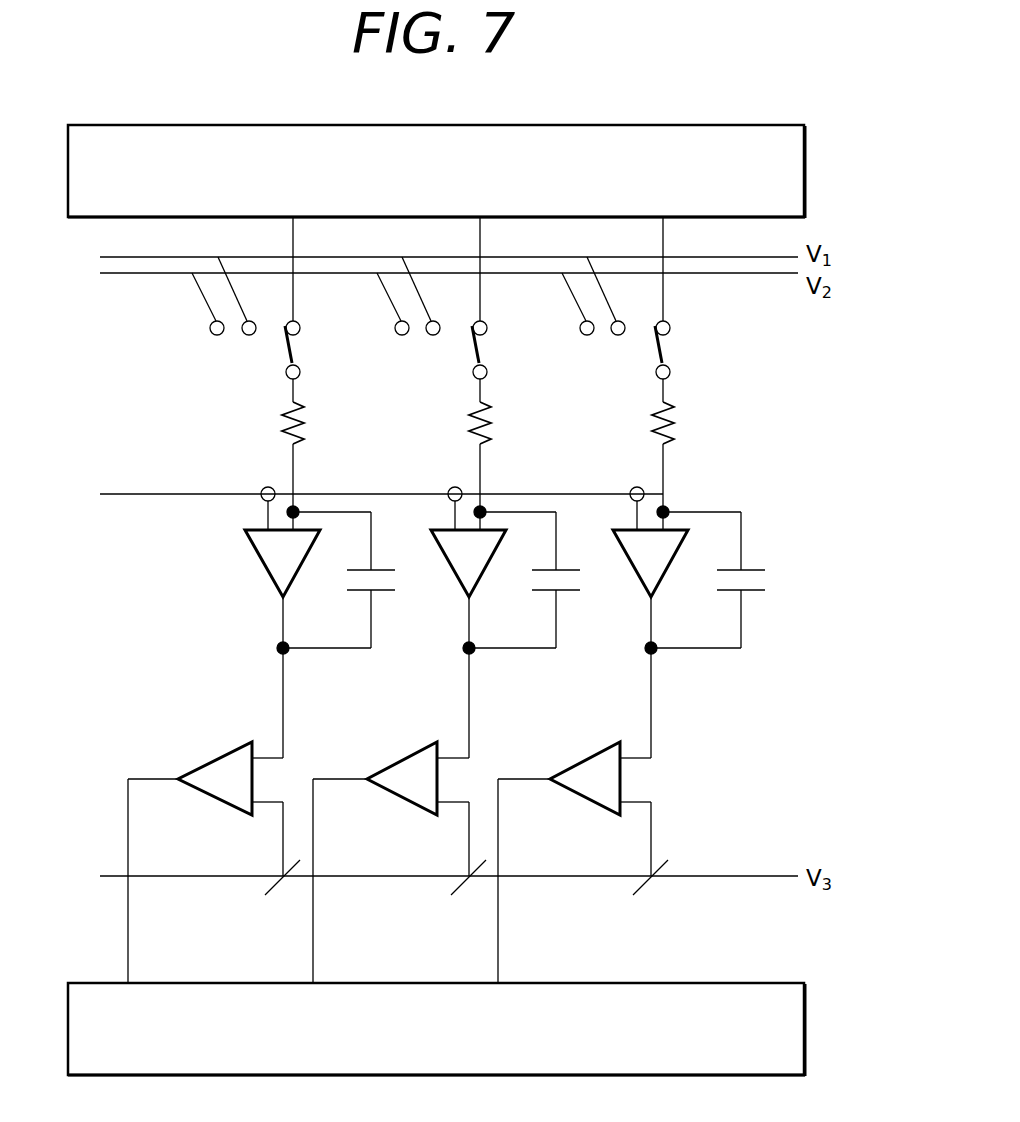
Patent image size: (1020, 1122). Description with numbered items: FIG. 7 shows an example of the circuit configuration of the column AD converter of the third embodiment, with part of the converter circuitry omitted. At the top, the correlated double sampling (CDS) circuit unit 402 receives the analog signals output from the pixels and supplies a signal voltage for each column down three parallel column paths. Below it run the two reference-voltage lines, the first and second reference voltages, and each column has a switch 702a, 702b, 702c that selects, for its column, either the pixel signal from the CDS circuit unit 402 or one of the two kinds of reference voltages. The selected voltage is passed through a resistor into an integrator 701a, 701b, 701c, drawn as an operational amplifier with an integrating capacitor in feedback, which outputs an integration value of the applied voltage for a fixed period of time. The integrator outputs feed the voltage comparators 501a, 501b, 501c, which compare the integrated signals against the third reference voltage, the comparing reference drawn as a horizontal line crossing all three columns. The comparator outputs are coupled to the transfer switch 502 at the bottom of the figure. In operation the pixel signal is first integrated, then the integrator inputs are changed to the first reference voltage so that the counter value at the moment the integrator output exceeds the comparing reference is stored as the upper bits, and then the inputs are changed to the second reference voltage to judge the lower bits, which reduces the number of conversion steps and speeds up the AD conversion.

The correlated double sampling (CDS) circuit unit 402 is at (806, 166).
The transfer switch 502 is at (806, 1029).
The switch 702a is at (308, 350).
The switch 702b is at (495, 350).
The switch 702c is at (678, 350).
The integrator 701a is at (250, 590).
The integrator 701b is at (440, 590).
The integrator 701c is at (623, 590).
The comparator 501a is at (217, 757).
The comparator 501b is at (405, 757).
The comparator 501c is at (589, 757).